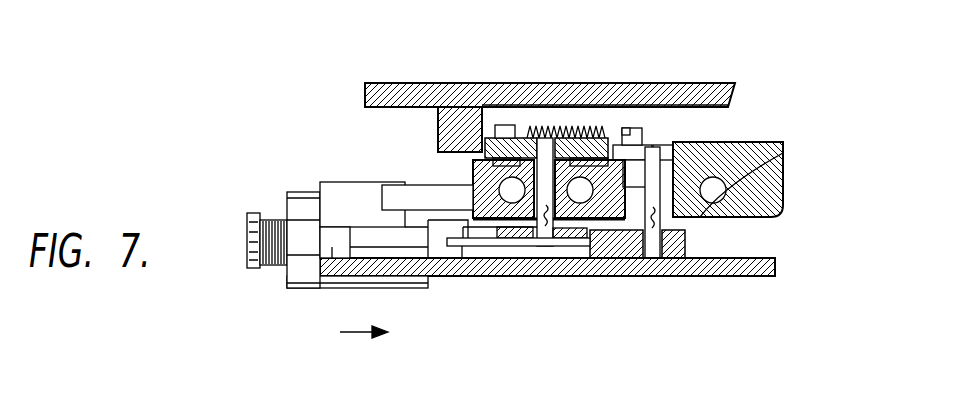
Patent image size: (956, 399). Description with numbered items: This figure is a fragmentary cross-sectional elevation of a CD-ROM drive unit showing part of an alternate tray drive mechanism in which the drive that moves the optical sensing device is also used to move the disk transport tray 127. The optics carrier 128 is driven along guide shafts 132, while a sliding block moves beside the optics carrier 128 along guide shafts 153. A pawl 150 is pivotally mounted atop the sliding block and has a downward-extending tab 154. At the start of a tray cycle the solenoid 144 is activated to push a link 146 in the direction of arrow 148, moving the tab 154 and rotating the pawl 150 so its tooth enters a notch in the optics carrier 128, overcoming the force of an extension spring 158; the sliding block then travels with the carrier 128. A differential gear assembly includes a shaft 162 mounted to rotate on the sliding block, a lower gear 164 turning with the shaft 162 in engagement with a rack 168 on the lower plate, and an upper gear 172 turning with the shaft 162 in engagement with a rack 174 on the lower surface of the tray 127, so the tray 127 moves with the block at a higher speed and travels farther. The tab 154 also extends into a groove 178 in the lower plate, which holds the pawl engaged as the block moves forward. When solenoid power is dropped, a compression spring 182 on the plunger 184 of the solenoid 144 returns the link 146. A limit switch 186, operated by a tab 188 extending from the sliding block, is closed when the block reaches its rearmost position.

The disk transport tray 127 is at (573, 85).
The optics carrier 128 is at (757, 142).
The guide shafts 132 is at (783, 153).
The solenoid 144 is at (335, 292).
The link 146 is at (478, 246).
The arrow 148 is at (368, 334).
The pawl 150 is at (660, 145).
The guide shafts 153 is at (472, 188).
The downward-extending tab 154 is at (656, 220).
The extension spring 158 is at (562, 85).
The shaft 162 is at (523, 244).
The lower gear 164 is at (497, 246).
The rack 168 is at (567, 247).
The upper gear 172 is at (505, 85).
The rack 174 is at (492, 85).
The groove 178 is at (653, 272).
The compression spring 182 is at (277, 217).
The plunger 184 is at (247, 250).
The limit switch 186 is at (337, 182).
The tab 188 is at (427, 185).